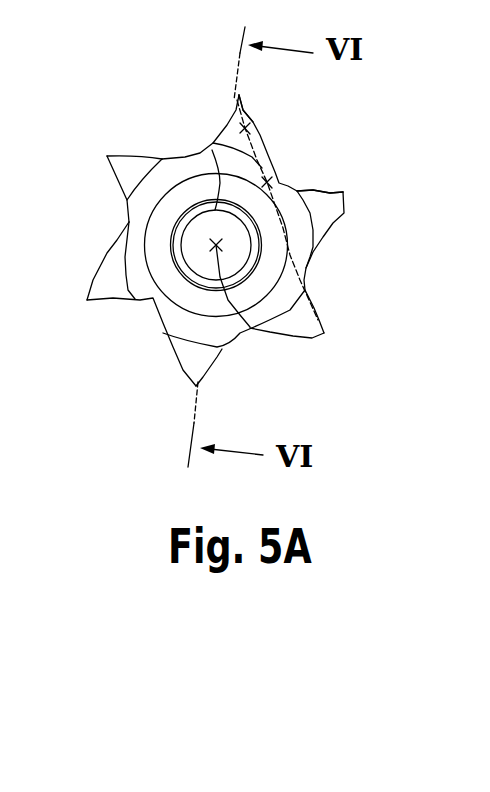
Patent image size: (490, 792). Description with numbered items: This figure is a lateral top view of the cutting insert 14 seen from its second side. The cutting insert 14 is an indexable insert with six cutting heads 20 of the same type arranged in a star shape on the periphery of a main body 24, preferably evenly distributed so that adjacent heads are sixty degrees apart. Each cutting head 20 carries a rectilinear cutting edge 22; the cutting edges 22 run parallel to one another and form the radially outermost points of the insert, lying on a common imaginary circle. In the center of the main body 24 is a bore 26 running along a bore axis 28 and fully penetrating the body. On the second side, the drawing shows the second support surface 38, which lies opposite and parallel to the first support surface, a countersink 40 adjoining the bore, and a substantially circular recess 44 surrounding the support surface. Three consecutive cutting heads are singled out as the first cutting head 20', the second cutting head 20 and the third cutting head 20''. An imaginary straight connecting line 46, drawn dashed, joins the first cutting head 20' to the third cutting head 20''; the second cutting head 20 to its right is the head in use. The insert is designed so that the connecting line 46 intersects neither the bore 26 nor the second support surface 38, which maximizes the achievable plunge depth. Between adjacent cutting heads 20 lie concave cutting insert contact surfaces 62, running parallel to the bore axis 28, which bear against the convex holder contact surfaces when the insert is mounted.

The cutting insert 14 is at (116, 98).
The cutting head 20 is at (362, 232).
The first cutting head 20' is at (294, 104).
The third cutting head 20'' is at (311, 378).
The cutting edge 22 is at (343, 192).
The main body 24 is at (140, 302).
The bore 26 is at (207, 232).
The bore axis 28 is at (253, 333).
The second support surface 38 is at (260, 186).
The countersink 40 is at (212, 150).
The recess 44 is at (148, 176).
The connecting line 46 is at (320, 327).
The cutting insert contact surface 62 is at (182, 152).